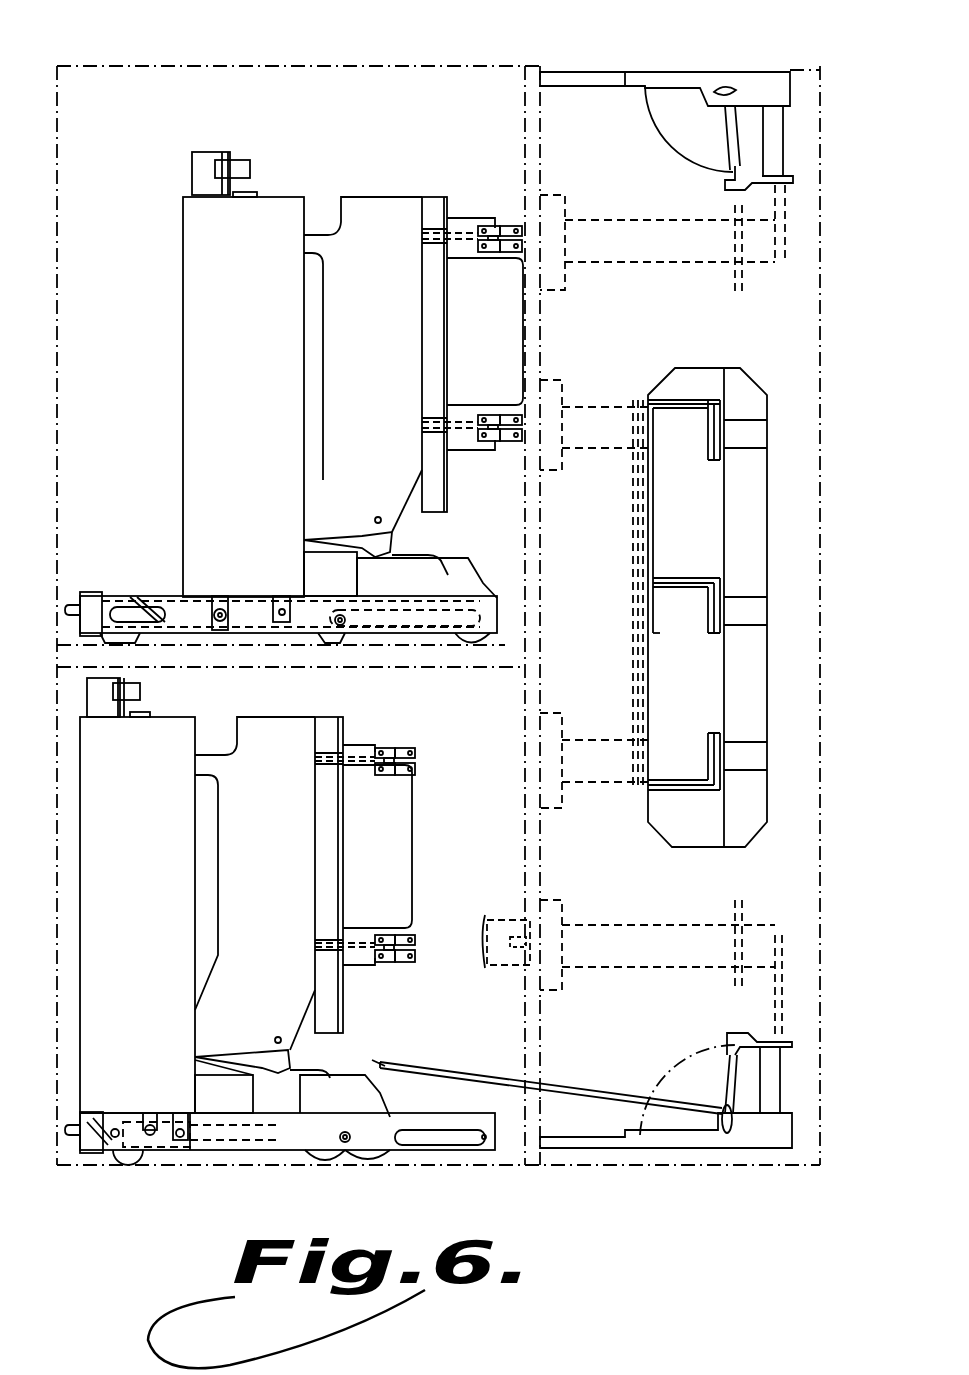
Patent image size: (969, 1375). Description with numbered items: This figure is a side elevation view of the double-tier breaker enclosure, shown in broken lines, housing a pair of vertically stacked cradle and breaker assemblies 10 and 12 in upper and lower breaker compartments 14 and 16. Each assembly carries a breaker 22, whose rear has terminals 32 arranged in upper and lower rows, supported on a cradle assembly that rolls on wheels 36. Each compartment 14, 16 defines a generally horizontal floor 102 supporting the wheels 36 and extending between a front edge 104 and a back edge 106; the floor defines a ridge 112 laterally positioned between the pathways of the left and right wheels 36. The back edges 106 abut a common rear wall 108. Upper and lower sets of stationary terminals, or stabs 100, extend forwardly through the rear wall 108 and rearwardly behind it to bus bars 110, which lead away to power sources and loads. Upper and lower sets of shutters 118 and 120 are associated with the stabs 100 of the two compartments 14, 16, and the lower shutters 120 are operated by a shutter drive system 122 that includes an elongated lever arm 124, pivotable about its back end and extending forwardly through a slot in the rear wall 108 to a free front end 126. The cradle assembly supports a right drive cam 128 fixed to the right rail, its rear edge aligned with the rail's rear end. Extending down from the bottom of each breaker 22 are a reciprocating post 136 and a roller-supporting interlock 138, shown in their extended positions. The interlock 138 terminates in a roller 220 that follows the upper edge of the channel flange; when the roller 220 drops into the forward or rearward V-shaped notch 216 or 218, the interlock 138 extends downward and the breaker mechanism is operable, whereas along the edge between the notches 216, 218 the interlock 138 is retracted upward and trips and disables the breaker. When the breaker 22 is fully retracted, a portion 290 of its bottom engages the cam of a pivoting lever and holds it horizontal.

The upper cradle and breaker assembly 10 is at (379, 54).
The lower cradle and breaker assembly 12 is at (80, 893).
The upper breaker compartment 14 is at (234, 302).
The lower breaker compartment 16 is at (123, 894).
The breaker 22 is at (383, 200).
The terminals 32 is at (512, 414).
The wheels 36 is at (465, 648).
The stationary terminals 100 is at (520, 246).
The floor 102 is at (518, 672).
The front edge 104 is at (57, 665).
The back edge 106 is at (535, 657).
The rear wall 108 is at (540, 1043).
The bus bars 110 is at (645, 697).
The ridge 112 is at (320, 648).
The upper set of shutters 118 is at (497, 218).
The lower set of shutters 120 is at (492, 962).
The shutter drive system 122 is at (717, 1135).
The elongated lever arm 124 is at (437, 1076).
The free front end 126 is at (378, 1063).
The drive cam 128 is at (378, 1101).
The reciprocating post 136 is at (288, 594).
The roller-supporting interlock 138 is at (258, 600).
The forward V-shaped notch 216 is at (122, 592).
The rearward V-shaped notch 218 is at (155, 640).
The roller 220 is at (240, 600).
The bottom portion of the breaker 290 is at (210, 600).